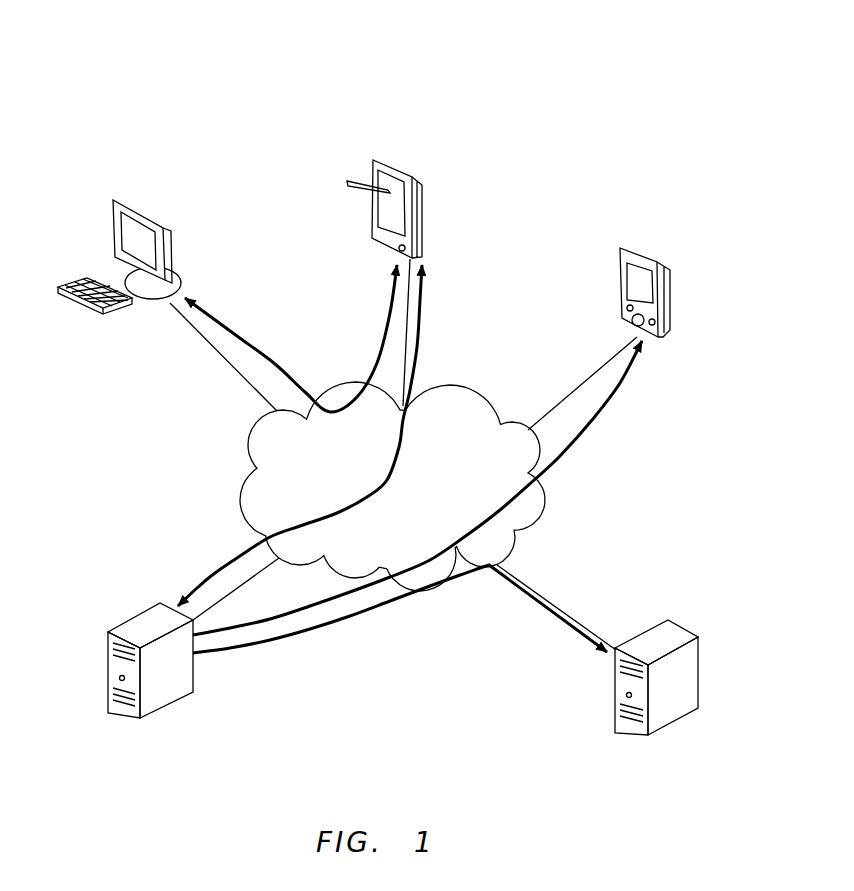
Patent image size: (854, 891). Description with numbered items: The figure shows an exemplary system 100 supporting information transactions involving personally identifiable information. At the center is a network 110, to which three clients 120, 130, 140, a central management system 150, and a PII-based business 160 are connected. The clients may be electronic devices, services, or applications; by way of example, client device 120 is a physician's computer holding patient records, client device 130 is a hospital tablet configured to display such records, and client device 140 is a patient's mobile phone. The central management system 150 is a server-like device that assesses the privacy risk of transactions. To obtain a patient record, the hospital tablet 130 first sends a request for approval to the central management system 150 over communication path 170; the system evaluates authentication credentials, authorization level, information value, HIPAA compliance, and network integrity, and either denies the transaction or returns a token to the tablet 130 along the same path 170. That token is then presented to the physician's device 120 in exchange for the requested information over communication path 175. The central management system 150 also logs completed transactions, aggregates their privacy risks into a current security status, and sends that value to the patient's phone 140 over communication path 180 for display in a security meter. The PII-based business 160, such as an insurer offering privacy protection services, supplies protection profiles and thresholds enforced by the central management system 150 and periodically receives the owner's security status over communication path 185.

The system 100 is at (118, 72).
The network 110 is at (464, 387).
The client device 120 is at (149, 210).
The client device 130 is at (404, 165).
The client device 140 is at (656, 256).
The central management system 150 is at (143, 611).
The PII-based business 160 is at (686, 629).
The communication path 170 is at (420, 327).
The communication path 175 is at (255, 342).
The communication path 180 is at (592, 420).
The communication path 185 is at (307, 628).